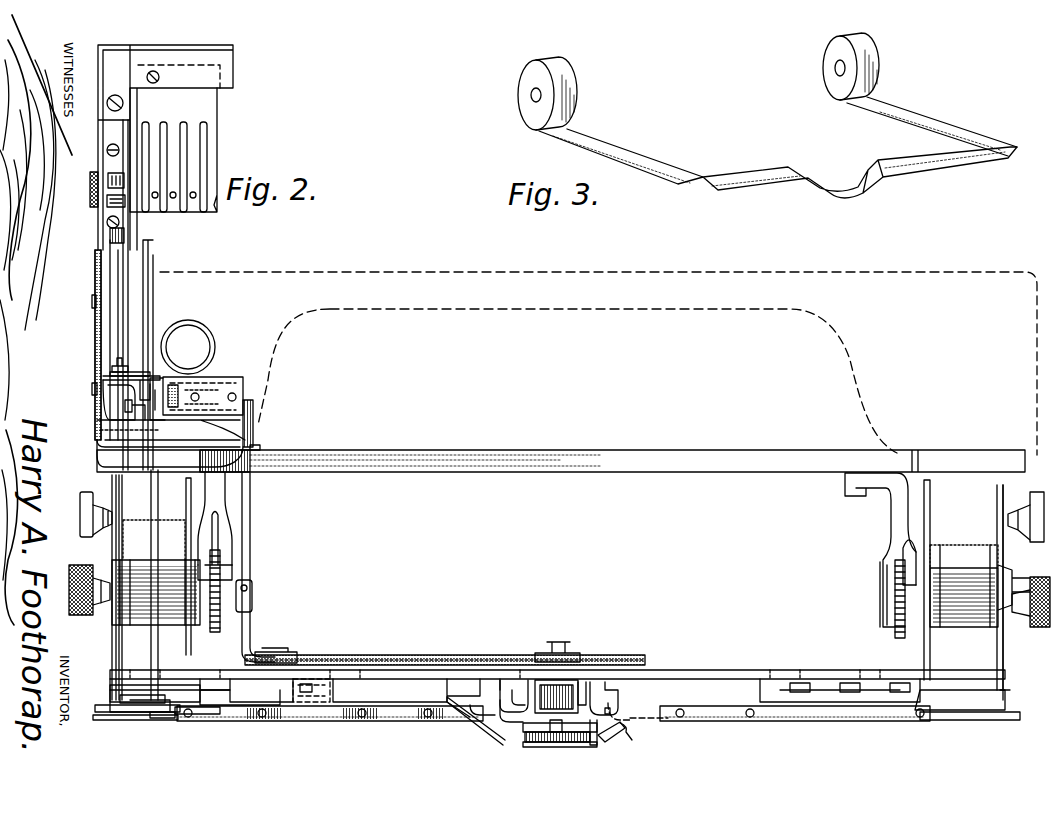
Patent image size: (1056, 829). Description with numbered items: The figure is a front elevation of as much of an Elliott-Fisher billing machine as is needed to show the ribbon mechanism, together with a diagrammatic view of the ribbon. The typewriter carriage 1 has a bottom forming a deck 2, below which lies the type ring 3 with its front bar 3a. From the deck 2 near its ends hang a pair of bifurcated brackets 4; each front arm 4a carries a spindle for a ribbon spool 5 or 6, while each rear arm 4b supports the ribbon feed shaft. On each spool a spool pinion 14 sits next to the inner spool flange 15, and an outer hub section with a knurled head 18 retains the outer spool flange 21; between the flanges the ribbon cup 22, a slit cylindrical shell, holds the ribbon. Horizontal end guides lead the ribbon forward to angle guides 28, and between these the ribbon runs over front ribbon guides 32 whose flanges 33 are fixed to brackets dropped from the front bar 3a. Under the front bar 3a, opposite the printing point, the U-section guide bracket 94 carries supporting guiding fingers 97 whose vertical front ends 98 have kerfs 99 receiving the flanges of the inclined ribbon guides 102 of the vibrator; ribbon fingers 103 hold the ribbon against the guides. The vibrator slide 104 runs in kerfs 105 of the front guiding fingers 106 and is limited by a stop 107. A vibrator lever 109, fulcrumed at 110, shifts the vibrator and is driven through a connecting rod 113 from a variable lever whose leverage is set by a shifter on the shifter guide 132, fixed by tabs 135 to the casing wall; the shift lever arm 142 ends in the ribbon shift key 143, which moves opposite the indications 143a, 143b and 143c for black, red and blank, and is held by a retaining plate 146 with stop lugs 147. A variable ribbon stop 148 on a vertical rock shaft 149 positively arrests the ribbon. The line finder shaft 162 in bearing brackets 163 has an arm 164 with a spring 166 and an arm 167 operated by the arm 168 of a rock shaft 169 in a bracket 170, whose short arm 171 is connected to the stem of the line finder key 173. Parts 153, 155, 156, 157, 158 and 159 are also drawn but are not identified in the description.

The typewriter carriage 1 is at (445, 312).
The deck 2 is at (656, 452).
The type ring 3 is at (722, 667).
The front bar of the type ring 3a is at (462, 662).
The bracket 4 is at (226, 505).
The front arm 4a is at (232, 548).
The rear arm 4b is at (220, 530).
The ribbon spool 5 is at (112, 640).
The ribbon spool 6 is at (1005, 648).
The spool pinion 14 is at (222, 620).
The inner spool flange 15 is at (188, 480).
The knurled head 18 is at (555, 586).
The outer spool flange 21 is at (115, 658).
The ribbon cup 22 is at (170, 560).
The angle guide 28 is at (160, 718).
The front ribbon guide 32 is at (400, 721).
The flange 33 is at (180, 716).
The guide bracket 94 is at (584, 690).
The supporting guiding finger 97 is at (612, 690).
The vertically disposed front end 98 is at (594, 742).
The kerf 99 is at (625, 712).
The inclined ribbon guide 102 is at (612, 740).
The ribbon finger 103 is at (627, 730).
The slide 104 is at (556, 748).
The kerf 105 is at (528, 735).
The front supporting and guiding finger 106 is at (528, 745).
The stop 107 is at (558, 738).
The vibrator lever 109 is at (250, 707).
The fulcrum 110 is at (335, 658).
The connecting rod 113 is at (115, 686).
The shifter guide 132 is at (150, 276).
The tab 135 is at (96, 290).
The arm 142 is at (140, 222).
The ribbon shift key 143 is at (90, 193).
The indication 143a is at (108, 178).
The indication 143b is at (107, 206).
The indication 143c is at (108, 232).
The retaining plate 146 is at (110, 262).
The stop lug 147 is at (123, 260).
The variable ribbon stop 148 is at (130, 712).
The vertical rock shaft 149 is at (160, 645).
The plate 153 is at (148, 705).
The bracket 155 is at (95, 392).
The plate 156 is at (103, 377).
The plate 157 is at (112, 372).
The pin 158 is at (125, 404).
The stud 159 is at (115, 368).
The line finder shaft 162 is at (412, 655).
The bearing bracket 163 is at (275, 650).
The arm 164 is at (570, 685).
The spring 166 is at (555, 660).
The arm 167 is at (253, 598).
The arm 168 is at (252, 562).
The rock shaft 169 is at (258, 430).
The bracket 170 is at (236, 378).
The short arm 171 is at (205, 378).
The line finder key 173 is at (207, 335).